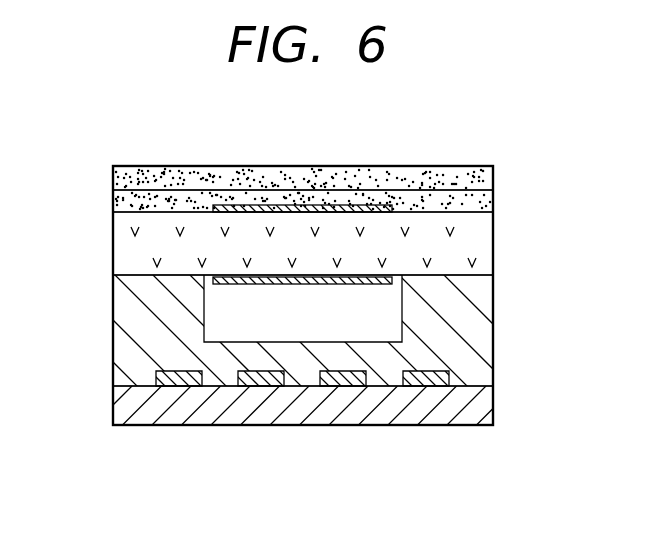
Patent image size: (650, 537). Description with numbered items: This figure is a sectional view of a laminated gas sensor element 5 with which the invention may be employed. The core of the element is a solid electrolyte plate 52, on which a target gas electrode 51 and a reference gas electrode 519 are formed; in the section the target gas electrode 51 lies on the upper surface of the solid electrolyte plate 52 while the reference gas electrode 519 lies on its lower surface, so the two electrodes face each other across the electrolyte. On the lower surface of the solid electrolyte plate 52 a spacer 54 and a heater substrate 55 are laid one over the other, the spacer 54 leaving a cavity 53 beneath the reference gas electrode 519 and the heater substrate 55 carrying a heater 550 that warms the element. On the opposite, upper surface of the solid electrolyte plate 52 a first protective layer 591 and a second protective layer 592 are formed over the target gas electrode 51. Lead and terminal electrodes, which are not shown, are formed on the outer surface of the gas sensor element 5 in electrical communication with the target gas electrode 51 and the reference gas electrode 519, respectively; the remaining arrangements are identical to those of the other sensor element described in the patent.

The gas sensor element 5 is at (92, 357).
The target gas electrode 51 is at (284, 206).
The solid electrolyte plate 52 is at (485, 248).
The cavity / pressure chamber 53 is at (385, 328).
The spacer 54 is at (485, 305).
The heater substrate 55 is at (485, 415).
The reference gas electrode 519 is at (246, 286).
The heater 550 is at (425, 386).
The first protective layer 591 is at (493, 200).
The second protective layer 592 is at (493, 173).